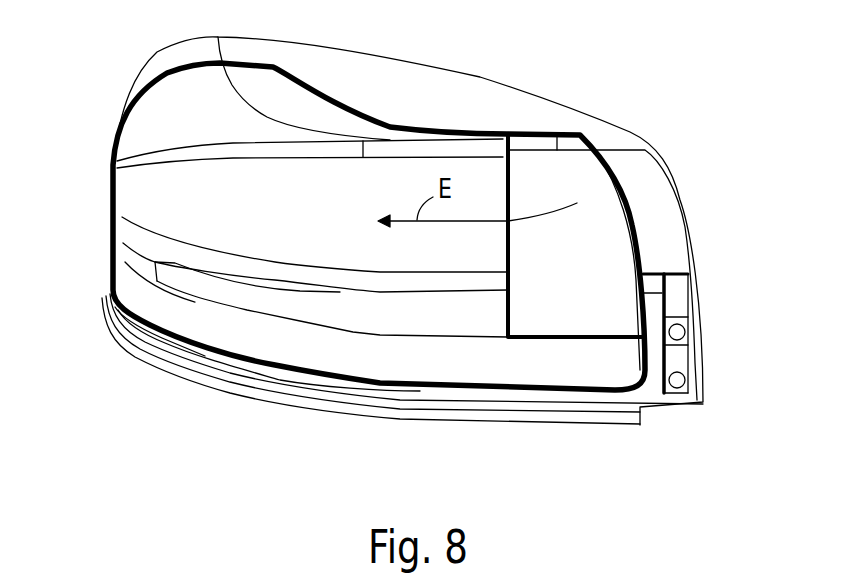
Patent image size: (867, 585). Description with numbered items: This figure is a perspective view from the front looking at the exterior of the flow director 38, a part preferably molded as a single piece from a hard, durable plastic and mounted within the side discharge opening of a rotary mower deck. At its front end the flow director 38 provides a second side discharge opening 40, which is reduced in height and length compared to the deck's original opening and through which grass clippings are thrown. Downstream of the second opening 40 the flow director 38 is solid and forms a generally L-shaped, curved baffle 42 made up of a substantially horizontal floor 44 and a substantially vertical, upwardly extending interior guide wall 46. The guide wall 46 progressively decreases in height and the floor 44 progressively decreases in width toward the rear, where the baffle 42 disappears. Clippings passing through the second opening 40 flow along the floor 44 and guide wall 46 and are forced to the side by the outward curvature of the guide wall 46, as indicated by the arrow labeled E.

The flow director 38 is at (478, 61).
The second side discharge opening 40 is at (602, 264).
The baffle 42 is at (173, 184).
The floor 44 is at (420, 302).
The interior guide wall 46 is at (317, 229).